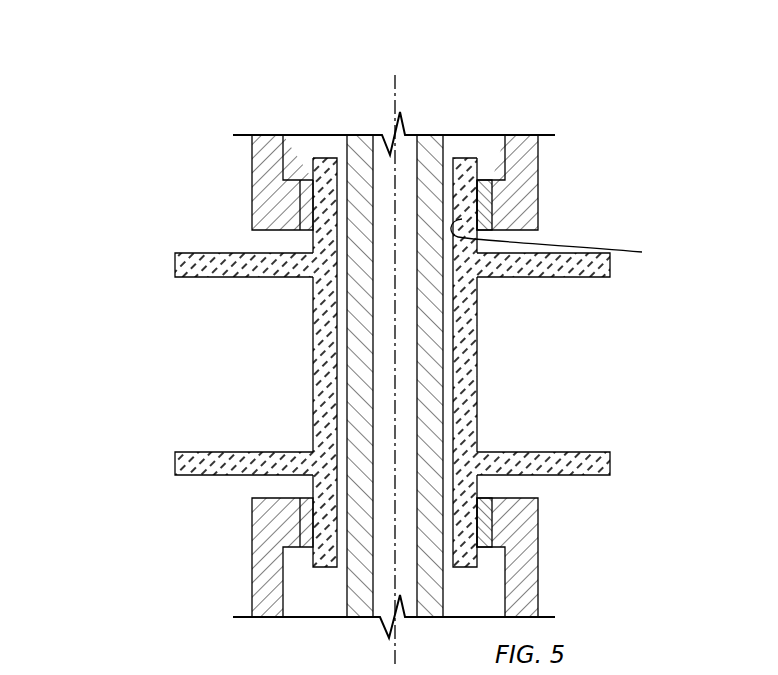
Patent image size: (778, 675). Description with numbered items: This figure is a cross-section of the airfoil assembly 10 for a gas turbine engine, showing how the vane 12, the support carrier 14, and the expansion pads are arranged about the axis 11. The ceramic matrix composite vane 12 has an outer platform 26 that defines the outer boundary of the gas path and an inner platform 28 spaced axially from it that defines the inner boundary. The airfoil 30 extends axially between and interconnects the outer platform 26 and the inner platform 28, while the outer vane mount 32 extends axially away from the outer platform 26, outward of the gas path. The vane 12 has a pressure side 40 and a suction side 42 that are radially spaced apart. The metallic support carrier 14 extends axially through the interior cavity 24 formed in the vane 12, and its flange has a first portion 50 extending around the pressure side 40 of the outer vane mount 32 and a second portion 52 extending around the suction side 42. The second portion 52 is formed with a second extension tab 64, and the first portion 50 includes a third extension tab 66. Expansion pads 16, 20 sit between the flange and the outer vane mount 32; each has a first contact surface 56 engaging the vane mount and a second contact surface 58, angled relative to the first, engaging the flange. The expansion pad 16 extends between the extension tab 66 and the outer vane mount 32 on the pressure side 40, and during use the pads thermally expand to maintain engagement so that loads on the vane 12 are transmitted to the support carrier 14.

The airfoil assembly 10 is at (166, 86).
The axis 11 is at (395, 92).
The vane 12 is at (209, 336).
The support carrier 14 is at (546, 321).
The expansion pad 16 is at (484, 168).
The expansion pad 20 is at (308, 168).
The interior cavity 24 is at (446, 167).
The outer platform 26 is at (176, 256).
The inner platform 28 is at (176, 459).
The airfoil 30 is at (286, 310).
The outer vane mount 32 is at (334, 155).
The pressure side 40 is at (480, 360).
The suction side 42 is at (308, 358).
The first portion 50 is at (545, 154).
The second portion 52 is at (248, 180).
The first contact surface 56 is at (563, 243).
The second contact surface 58 is at (492, 200).
The second extension tab 64 is at (293, 168).
The third extension tab 66 is at (499, 168).